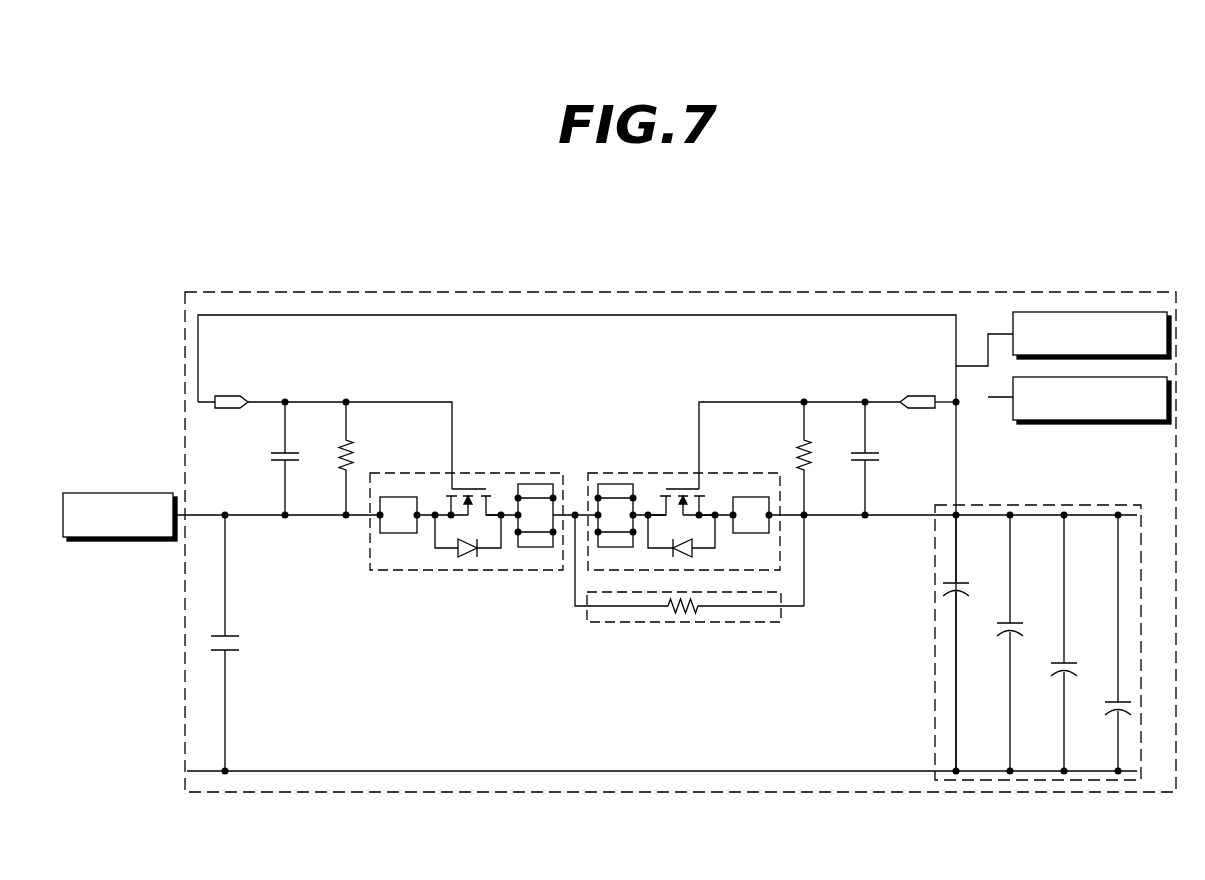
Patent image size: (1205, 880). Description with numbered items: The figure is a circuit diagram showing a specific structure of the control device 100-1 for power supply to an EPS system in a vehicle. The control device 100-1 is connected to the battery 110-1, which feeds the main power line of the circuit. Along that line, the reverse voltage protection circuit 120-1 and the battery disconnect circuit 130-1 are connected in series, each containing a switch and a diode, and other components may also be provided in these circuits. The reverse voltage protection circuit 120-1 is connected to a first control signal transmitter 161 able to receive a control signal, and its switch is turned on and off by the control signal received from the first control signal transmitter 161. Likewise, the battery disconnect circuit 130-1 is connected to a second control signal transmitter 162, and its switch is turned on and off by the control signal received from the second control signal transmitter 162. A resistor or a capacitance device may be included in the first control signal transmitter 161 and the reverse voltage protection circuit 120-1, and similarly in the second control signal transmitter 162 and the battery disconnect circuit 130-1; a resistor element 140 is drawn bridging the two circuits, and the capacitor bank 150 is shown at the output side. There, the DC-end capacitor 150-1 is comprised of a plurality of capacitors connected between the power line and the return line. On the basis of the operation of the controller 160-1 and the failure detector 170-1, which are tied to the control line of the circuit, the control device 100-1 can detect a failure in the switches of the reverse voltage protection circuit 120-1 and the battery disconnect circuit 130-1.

The control device for power supply to an EPS system 100-1 is at (759, 292).
The battery 110-1 is at (114, 492).
The reverse voltage protection circuit 120-1 is at (500, 473).
The battery disconnect circuit 130-1 is at (625, 473).
The resistor unit 140 is at (683, 623).
The capacitor unit 150 is at (1043, 505).
The DC-end capacitor 150-1 is at (933, 665).
The controller 160-1 is at (1087, 311).
The failure detector 170-1 is at (1101, 423).
The first control signal transmitter 161 is at (225, 395).
The second control signal transmitter 162 is at (917, 395).